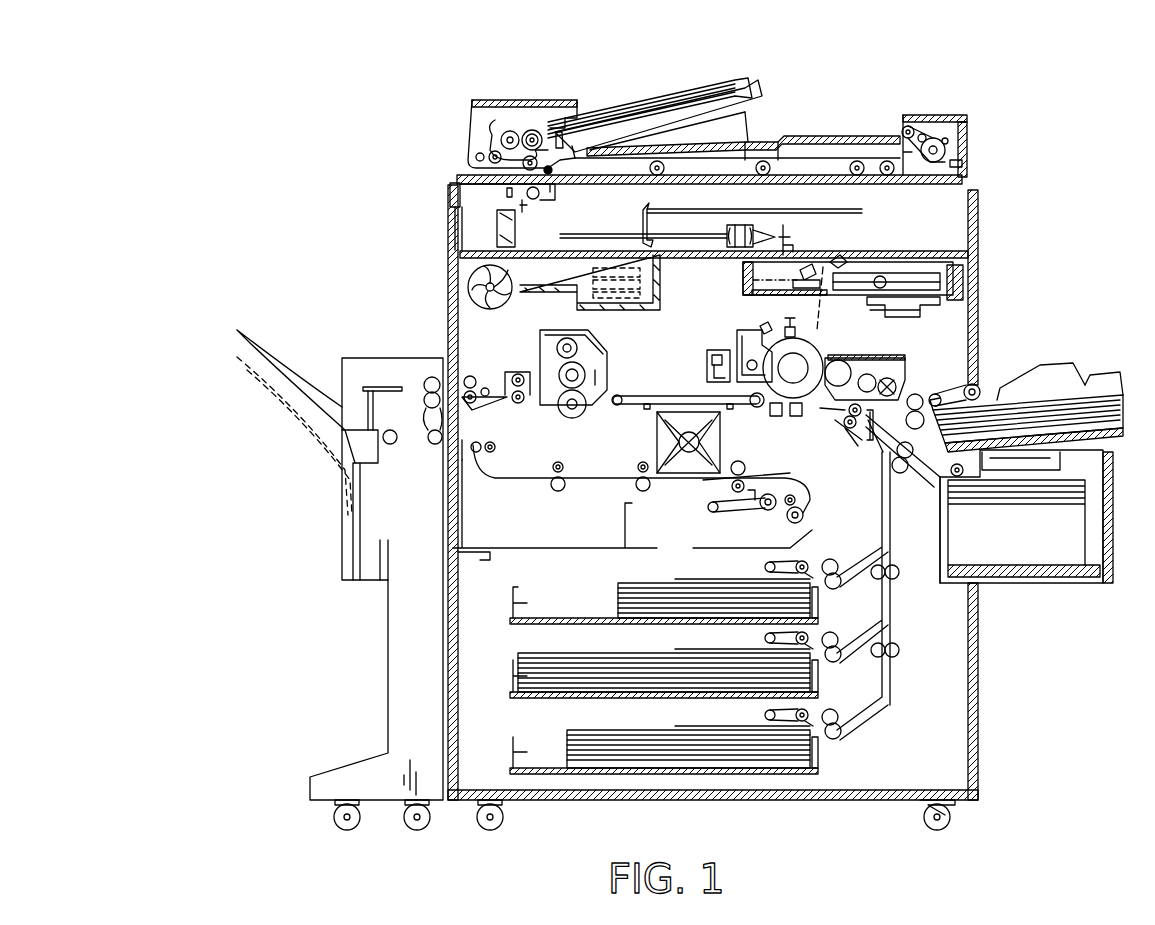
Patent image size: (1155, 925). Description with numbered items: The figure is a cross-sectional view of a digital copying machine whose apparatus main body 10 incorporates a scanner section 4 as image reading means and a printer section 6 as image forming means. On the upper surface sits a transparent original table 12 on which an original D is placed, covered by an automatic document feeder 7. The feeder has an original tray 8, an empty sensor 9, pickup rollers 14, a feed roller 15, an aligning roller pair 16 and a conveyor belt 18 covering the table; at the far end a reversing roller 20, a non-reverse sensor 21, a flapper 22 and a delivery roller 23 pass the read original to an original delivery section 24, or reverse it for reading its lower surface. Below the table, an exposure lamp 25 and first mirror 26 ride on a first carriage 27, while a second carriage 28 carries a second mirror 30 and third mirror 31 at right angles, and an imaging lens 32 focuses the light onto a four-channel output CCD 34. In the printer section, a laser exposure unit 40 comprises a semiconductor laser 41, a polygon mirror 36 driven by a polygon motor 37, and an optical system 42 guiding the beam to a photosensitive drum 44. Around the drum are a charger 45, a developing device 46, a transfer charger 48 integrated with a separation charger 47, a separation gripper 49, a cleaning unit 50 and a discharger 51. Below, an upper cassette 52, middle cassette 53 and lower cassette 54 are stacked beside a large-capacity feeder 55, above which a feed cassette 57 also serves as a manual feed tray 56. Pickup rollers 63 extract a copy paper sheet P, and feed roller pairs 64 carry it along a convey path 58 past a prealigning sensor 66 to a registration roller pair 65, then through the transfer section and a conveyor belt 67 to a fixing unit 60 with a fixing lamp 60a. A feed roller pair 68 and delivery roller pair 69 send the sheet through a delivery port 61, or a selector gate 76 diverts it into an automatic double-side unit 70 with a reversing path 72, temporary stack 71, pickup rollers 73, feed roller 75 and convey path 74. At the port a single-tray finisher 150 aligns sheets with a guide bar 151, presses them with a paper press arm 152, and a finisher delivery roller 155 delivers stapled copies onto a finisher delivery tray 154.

The scanner section 4 is at (698, 203).
The printer section 6 is at (918, 340).
The automatic document feeder 7 is at (612, 102).
The original tray 8 is at (724, 100).
The empty sensor 9 is at (557, 132).
The apparatus main body 10 is at (980, 676).
The original table 12 is at (833, 176).
The pickup rollers 14 is at (518, 132).
The feed roller 15 is at (490, 150).
The aligning roller pair 16 is at (490, 165).
The conveyor belt 18 is at (726, 146).
The reversing roller 20 is at (968, 152).
The non-reverse sensor 21 is at (962, 164).
The flapper 22 is at (933, 138).
The delivery roller 23 is at (904, 125).
The original delivery section 24 is at (762, 142).
The exposure lamp 25 is at (540, 196).
The first mirror 26 is at (528, 212).
The first carriage 27 is at (455, 190).
The second carriage 28 is at (497, 218).
The second mirror 30 is at (497, 240).
The third mirror 31 is at (505, 258).
The imaging lens 32 is at (745, 225).
The 4-channel output CCD 34 is at (793, 240).
The polygon mirror 36 is at (925, 272).
The polygon motor 37 is at (922, 312).
The laser exposure unit 40 is at (962, 278).
The semiconductor laser 41 is at (850, 258).
The optical system 42 is at (770, 272).
The photosensitive drum 44 is at (812, 352).
The charger 45 is at (798, 300).
The developing device 46 is at (912, 362).
The separation charger 47 is at (722, 422).
The transfer charger 48 is at (745, 430).
The separation gripper 49 is at (700, 397).
The cleaning unit 50 is at (717, 350).
The discharger 51 is at (750, 338).
The upper cassette 52 is at (513, 604).
The middle cassette 53 is at (513, 678).
The lower cassette 54 is at (513, 752).
The large-capacity feeder 55 is at (1045, 555).
The manual feed tray 56 is at (1045, 375).
The feed cassette 57 is at (1112, 372).
The convey path 58 is at (640, 394).
The fixing unit 60 is at (588, 348).
The fixing lamp 60a is at (556, 340).
The delivery port 61 is at (462, 362).
The pickup rollers 63 is at (978, 384).
The feed roller pairs 64 is at (917, 394).
The registration roller pair 65 is at (848, 416).
The prealigning sensor 66 is at (852, 428).
The conveyor belt 67 is at (618, 406).
The feed roller pair 68 is at (520, 404).
The delivery roller pair 69 is at (478, 360).
The automatic double-side unit 70 is at (505, 490).
The temporary stack 71 is at (668, 520).
The reversing path 72 is at (535, 490).
The pickup rollers 73 is at (745, 512).
The convey path 74 is at (818, 495).
The feed roller 75 is at (790, 520).
The selector gate 76 is at (510, 386).
The single-tray finisher 150 is at (336, 372).
The guide bar 151 is at (380, 385).
The paper press arm 152 is at (432, 445).
The finisher delivery tray 154 is at (256, 342).
The finisher delivery roller 155 is at (391, 446).
The original D is at (705, 88).
The copy paper sheet P is at (630, 600).